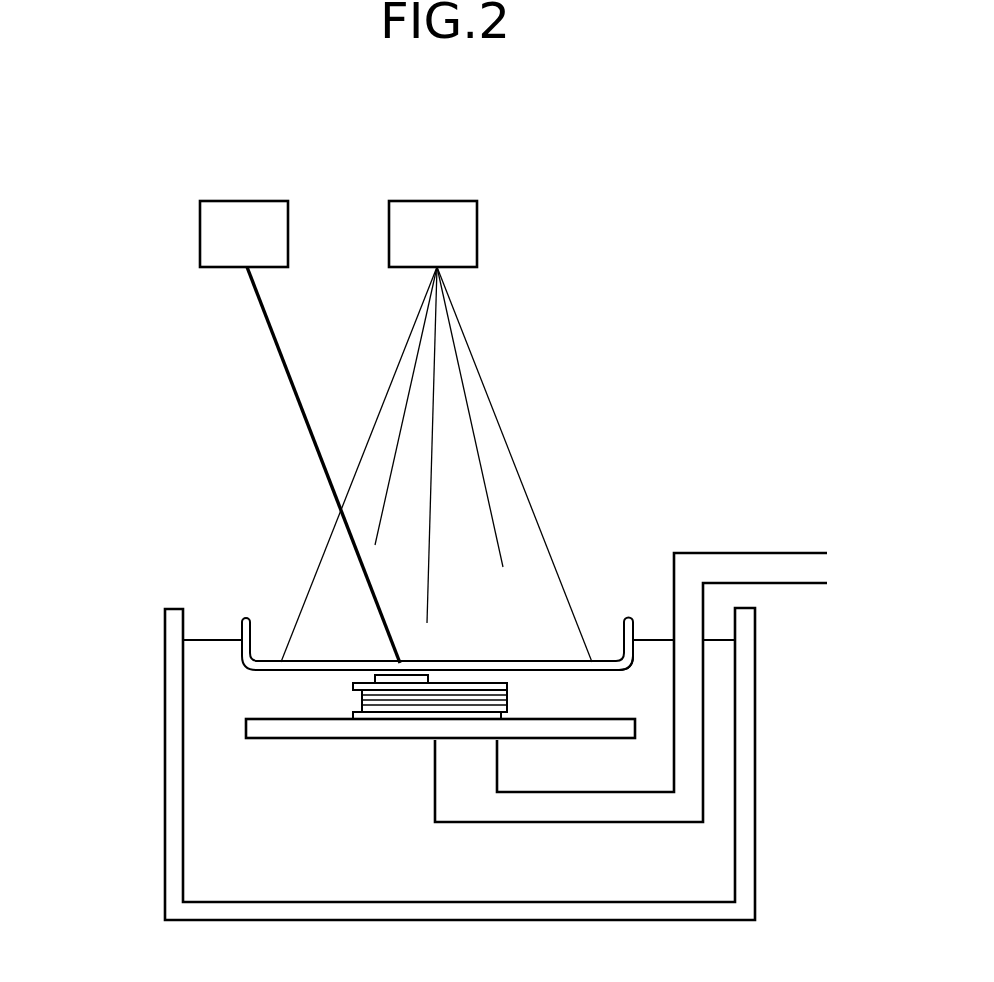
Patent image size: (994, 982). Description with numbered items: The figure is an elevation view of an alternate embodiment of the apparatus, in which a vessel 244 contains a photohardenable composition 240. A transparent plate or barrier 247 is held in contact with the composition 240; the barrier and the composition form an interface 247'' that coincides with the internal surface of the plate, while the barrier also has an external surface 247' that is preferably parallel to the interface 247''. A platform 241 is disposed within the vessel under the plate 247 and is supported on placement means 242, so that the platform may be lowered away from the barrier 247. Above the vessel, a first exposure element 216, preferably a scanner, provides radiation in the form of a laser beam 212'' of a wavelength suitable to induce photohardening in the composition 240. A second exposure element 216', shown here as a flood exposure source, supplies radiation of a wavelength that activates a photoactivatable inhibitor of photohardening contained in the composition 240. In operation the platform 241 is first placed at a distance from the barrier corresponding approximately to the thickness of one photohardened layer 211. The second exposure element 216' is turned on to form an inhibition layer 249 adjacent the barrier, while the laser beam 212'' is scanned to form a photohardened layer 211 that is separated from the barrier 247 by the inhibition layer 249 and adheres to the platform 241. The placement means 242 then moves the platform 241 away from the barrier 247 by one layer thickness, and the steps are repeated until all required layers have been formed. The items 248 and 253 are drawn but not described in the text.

The first exposure element 216 is at (226, 205).
The second exposure element 216' is at (475, 205).
The laser beam 212'' is at (294, 465).
The transparent plate or barrier 247 is at (467, 586).
The external surface 247' is at (459, 562).
The interface 247'' is at (724, 686).
The inhibition layer 249 is at (392, 672).
The base plate 248 is at (453, 677).
The photohardened layer 211 is at (370, 703).
The platform 241 is at (403, 740).
The placement means 242 is at (528, 810).
The vessel 244 is at (165, 742).
The photohardenable composition 240 is at (237, 827).
The liquid surface 253 is at (215, 640).